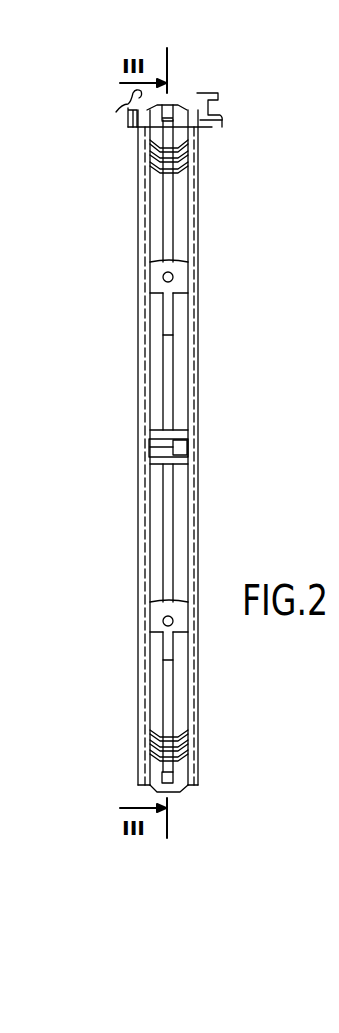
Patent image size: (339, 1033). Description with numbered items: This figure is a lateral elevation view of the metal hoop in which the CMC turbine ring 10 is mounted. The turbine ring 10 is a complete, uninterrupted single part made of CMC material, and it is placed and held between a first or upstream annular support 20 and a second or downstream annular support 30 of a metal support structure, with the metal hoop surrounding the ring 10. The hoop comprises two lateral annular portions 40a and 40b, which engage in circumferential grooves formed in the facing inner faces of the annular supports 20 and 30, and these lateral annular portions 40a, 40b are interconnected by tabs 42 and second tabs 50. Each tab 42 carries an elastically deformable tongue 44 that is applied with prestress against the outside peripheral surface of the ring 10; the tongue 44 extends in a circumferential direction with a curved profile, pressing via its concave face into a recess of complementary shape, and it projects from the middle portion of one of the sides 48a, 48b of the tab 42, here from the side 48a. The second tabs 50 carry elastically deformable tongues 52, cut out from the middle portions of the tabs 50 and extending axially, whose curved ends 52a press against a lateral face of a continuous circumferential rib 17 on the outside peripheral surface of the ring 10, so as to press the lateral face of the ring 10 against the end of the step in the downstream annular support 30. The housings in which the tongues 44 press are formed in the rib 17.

The turbine ring 10 is at (180, 698).
The circumferential rib 17 is at (170, 545).
The upstream annular support 20 is at (126, 110).
The downstream annular support 30 is at (225, 122).
The lateral annular portion 40a is at (137, 381).
The lateral annular portion 40b is at (199, 378).
The tab 42 is at (175, 280).
The elastically deformable tongue 44 is at (168, 313).
The side of tab 48a is at (152, 296).
The side of tab 48b is at (170, 261).
The second tab 50 is at (175, 469).
The elastically deformable tongue 52 is at (157, 447).
The curved end 52a is at (178, 452).